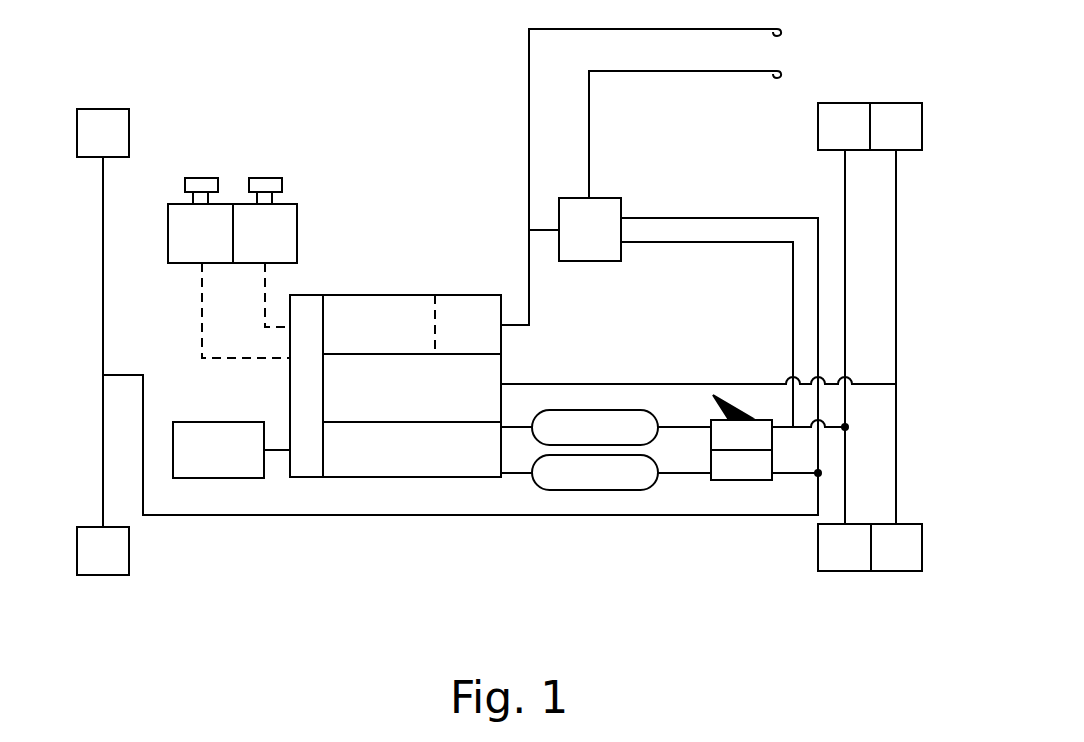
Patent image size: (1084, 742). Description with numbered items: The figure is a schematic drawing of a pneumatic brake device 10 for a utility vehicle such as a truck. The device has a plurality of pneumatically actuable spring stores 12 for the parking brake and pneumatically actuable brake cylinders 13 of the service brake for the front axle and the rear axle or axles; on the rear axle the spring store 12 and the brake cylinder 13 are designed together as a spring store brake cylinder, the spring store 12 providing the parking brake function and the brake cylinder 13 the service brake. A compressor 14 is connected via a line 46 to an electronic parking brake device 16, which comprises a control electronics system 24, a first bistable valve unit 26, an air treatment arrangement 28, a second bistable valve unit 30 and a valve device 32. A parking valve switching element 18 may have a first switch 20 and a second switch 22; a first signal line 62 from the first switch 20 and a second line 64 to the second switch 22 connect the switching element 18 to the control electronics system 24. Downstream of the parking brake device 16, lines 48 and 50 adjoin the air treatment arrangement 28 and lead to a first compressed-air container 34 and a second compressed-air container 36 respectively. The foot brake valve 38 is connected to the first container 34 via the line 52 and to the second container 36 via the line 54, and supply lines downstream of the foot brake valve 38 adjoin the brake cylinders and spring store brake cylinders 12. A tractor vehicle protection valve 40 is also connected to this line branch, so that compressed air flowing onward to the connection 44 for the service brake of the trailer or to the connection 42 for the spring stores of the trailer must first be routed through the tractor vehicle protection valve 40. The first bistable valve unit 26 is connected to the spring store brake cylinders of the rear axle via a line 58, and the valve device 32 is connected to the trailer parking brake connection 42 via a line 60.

The pneumatic brake device 10 is at (389, 126).
The spring store 12 is at (900, 118).
The brake cylinder 13 is at (94, 122).
The compressor 14 is at (216, 432).
The electronic parking brake device 16 is at (422, 270).
The parking valve switching element 18 is at (232, 188).
The first switch 20 is at (193, 255).
The second switch 22 is at (283, 216).
The control electronics system 24 is at (307, 450).
The first bistable valve unit 26 is at (492, 374).
The air treatment arrangement 28 is at (393, 452).
The second bistable valve unit 30 is at (363, 311).
The valve device 32 is at (468, 314).
The first compressed-air container 34 is at (612, 425).
The second compressed-air container 36 is at (598, 473).
The foot brake valve 38 is at (760, 435).
The tractor vehicle protection valve 40 is at (581, 262).
The connection for the parking brake of a trailer 42 is at (796, 30).
The connection for the service brake of the trailer 44 is at (704, 127).
The line 46 is at (278, 450).
The line 48 is at (517, 428).
The line 50 is at (523, 473).
The line 52 is at (697, 427).
The line 54 is at (680, 476).
The line 58 is at (582, 383).
The line 60 is at (529, 92).
The first signal line 62 is at (200, 340).
The second line 64 is at (265, 300).